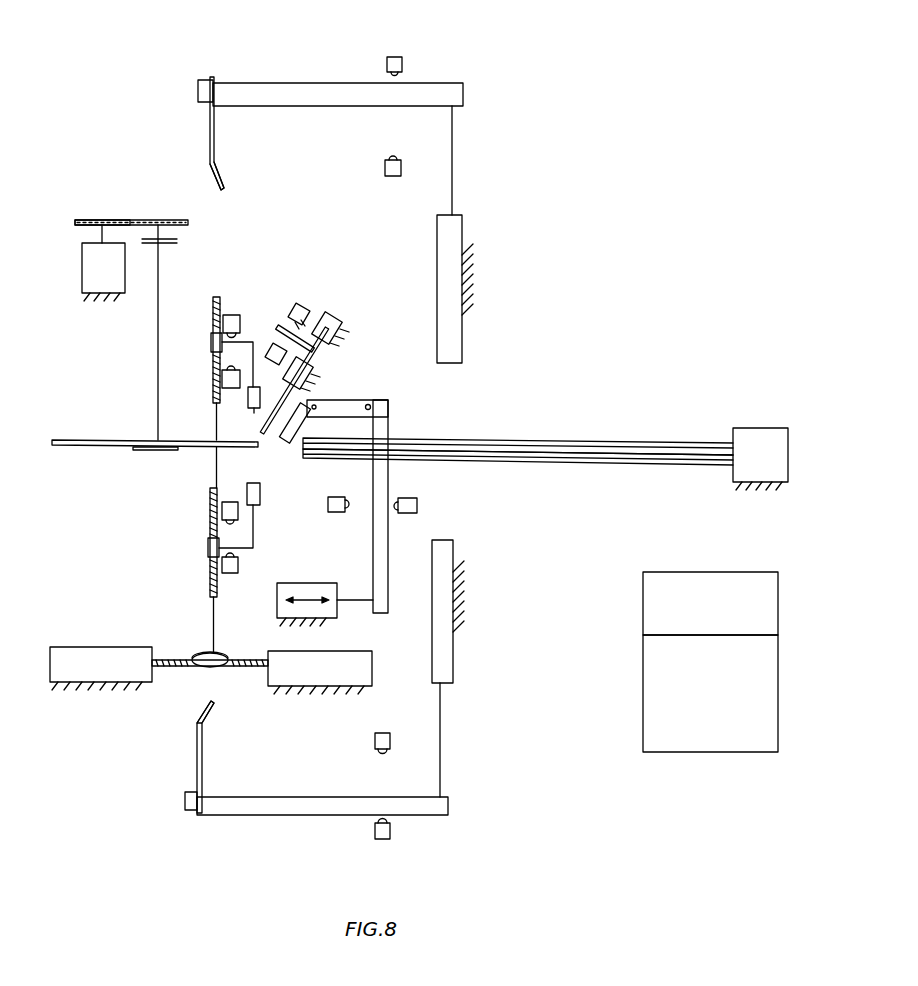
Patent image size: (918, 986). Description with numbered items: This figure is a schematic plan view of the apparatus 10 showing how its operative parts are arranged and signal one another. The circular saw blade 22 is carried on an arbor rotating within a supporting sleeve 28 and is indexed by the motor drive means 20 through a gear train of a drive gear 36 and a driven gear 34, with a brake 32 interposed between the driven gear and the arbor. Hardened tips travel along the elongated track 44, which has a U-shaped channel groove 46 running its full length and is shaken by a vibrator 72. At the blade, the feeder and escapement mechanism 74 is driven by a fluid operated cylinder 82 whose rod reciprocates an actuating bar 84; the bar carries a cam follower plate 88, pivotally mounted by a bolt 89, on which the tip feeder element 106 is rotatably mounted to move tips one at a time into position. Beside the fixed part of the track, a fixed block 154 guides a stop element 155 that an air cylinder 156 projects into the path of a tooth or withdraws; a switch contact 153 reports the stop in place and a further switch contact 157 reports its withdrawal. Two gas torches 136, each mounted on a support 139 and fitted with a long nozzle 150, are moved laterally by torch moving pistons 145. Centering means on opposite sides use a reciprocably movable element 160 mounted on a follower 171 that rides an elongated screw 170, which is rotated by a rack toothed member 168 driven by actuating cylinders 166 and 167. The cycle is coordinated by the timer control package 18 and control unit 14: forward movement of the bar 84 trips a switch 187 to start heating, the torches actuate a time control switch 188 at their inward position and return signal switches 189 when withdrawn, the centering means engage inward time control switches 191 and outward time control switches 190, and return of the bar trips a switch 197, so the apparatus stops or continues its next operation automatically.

The apparatus 10 is at (575, 204).
The control unit 14 is at (778, 615).
The timer control package 18 is at (778, 675).
The motor drive means 20 is at (82, 278).
The circular saw blade 22 is at (70, 440).
The supporting sleeve 28 is at (158, 352).
The brake 32 is at (177, 243).
The driven gear 34 is at (160, 220).
The drive gear 36 is at (88, 220).
The elongated track 44 is at (589, 438).
The U-shaped channel groove 46 is at (698, 454).
The vibrator 72 is at (778, 428).
The feeder and escapement mechanism 74 is at (392, 359).
The fluid operated cylinder 82 is at (308, 583).
The actuating bar 84 is at (388, 432).
The cam follower plate 88 is at (350, 400).
The bolt 89 is at (385, 406).
The tip feeder element 106 is at (296, 442).
The gas torch 136 is at (214, 133).
The support 139 is at (292, 90).
The torch moving piston 145 is at (462, 237).
The nozzle 150 is at (226, 186).
The switch contact 153 is at (270, 343).
The fixed block 154 is at (316, 366).
The stop element 155 is at (268, 440).
The air cylinder 156 is at (336, 317).
The switch contact 157 is at (298, 305).
The reciprocably movable element 160 is at (247, 403).
The actuating cylinder 166 is at (118, 623).
The actuating cylinder 167 is at (345, 651).
The rack toothed member 168 is at (209, 653).
The elongated screw 170 is at (213, 318).
The follower 171 is at (211, 342).
The switch 187 is at (328, 505).
The time control switch 188 is at (385, 168).
The return signal switch 189 is at (403, 65).
The time control switch 190 is at (233, 315).
The inward time control switch 191 is at (221, 388).
The switch 197 is at (417, 506).